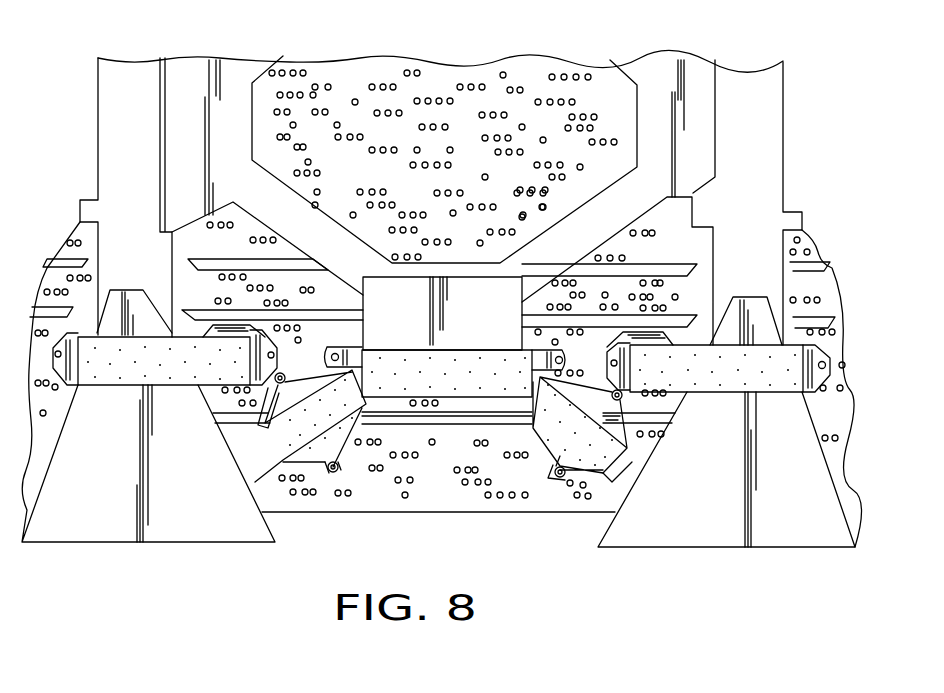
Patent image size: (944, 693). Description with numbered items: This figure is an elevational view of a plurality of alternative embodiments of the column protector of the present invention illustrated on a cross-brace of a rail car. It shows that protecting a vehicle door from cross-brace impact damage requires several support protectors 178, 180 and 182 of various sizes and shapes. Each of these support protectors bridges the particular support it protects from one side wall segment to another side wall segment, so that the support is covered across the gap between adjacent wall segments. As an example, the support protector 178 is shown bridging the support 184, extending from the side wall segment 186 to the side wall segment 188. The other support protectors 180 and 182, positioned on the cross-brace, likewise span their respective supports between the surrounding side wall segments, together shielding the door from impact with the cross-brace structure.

The support protector 178 is at (592, 450).
The support protector 180 is at (783, 380).
The support protector 182 is at (510, 373).
The support 184 is at (623, 470).
The side wall segment 186 is at (542, 457).
The side wall segment 188 is at (660, 430).